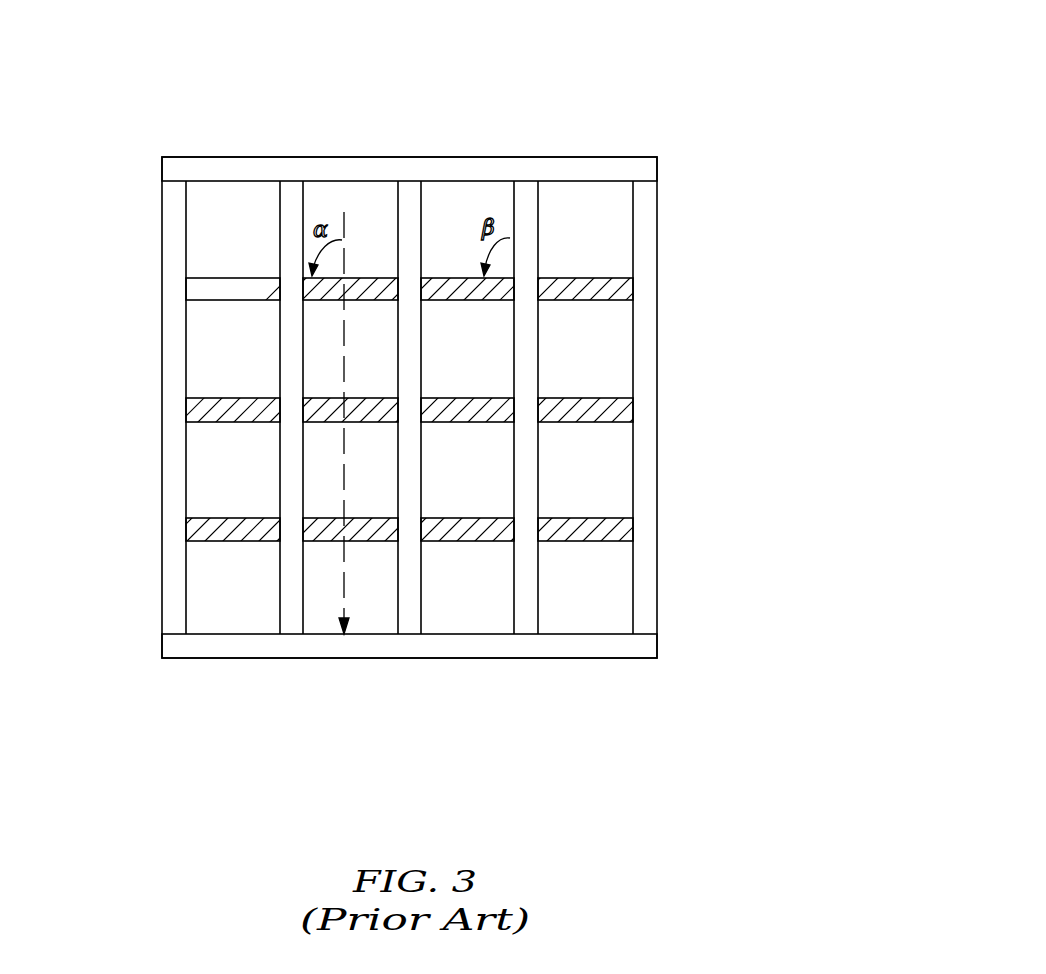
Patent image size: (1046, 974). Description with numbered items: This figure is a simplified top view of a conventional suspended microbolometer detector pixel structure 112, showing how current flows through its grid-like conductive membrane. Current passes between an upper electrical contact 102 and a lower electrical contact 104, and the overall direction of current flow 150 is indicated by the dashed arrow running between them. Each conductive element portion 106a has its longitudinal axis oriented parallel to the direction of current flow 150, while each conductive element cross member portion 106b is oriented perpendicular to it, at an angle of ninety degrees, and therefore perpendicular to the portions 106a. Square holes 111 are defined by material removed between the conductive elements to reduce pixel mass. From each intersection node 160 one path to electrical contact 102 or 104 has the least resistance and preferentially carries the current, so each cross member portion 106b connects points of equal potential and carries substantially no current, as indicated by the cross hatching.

The suspended microbolometer detector pixel structure 112 is at (668, 38).
The electrical contact 102 is at (575, 157).
The electrical contact 104 is at (578, 658).
The conductive element portion 106a is at (538, 475).
The conductive element cross member portion 106b is at (600, 397).
The square holes 111 is at (210, 580).
The intersection node 160 is at (530, 528).
The overall direction of current flow 150 is at (343, 212).